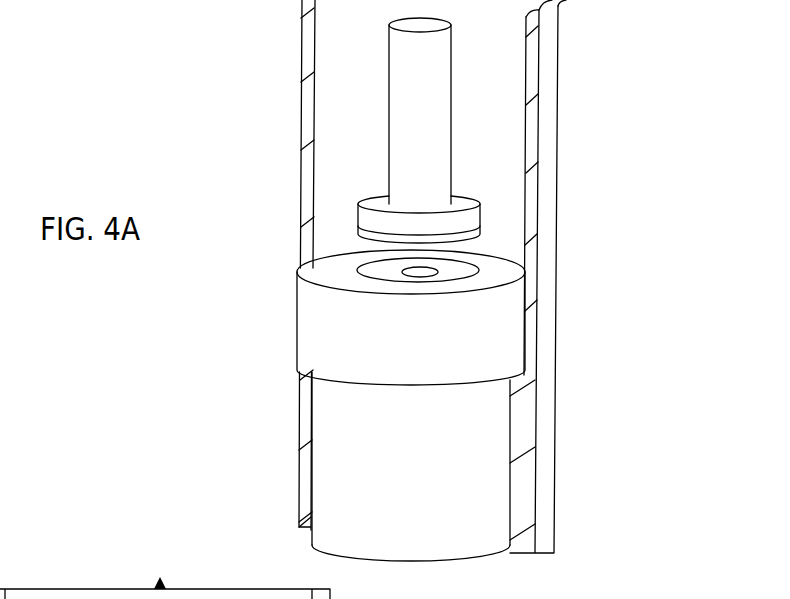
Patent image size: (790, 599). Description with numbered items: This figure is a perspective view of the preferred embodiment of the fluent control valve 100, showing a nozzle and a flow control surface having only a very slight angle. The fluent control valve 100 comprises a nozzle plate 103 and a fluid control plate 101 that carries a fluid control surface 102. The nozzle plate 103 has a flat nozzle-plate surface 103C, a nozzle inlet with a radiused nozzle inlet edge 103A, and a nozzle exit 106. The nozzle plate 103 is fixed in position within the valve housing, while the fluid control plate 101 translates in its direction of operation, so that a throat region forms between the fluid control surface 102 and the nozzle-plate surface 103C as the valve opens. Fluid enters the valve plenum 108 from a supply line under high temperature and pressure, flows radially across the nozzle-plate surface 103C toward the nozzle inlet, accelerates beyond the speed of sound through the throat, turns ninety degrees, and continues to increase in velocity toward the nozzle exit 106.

The fluent control valve 100 is at (649, 84).
The fluid control plate 101 is at (433, 223).
The fluid control surface 102 is at (452, 241).
The nozzle plate 103 is at (456, 485).
The radiused nozzle inlet edge 103A is at (402, 272).
The nozzle-plate surface 103C is at (429, 299).
The nozzle exit 106 is at (495, 560).
The valve plenum 108 is at (328, 122).